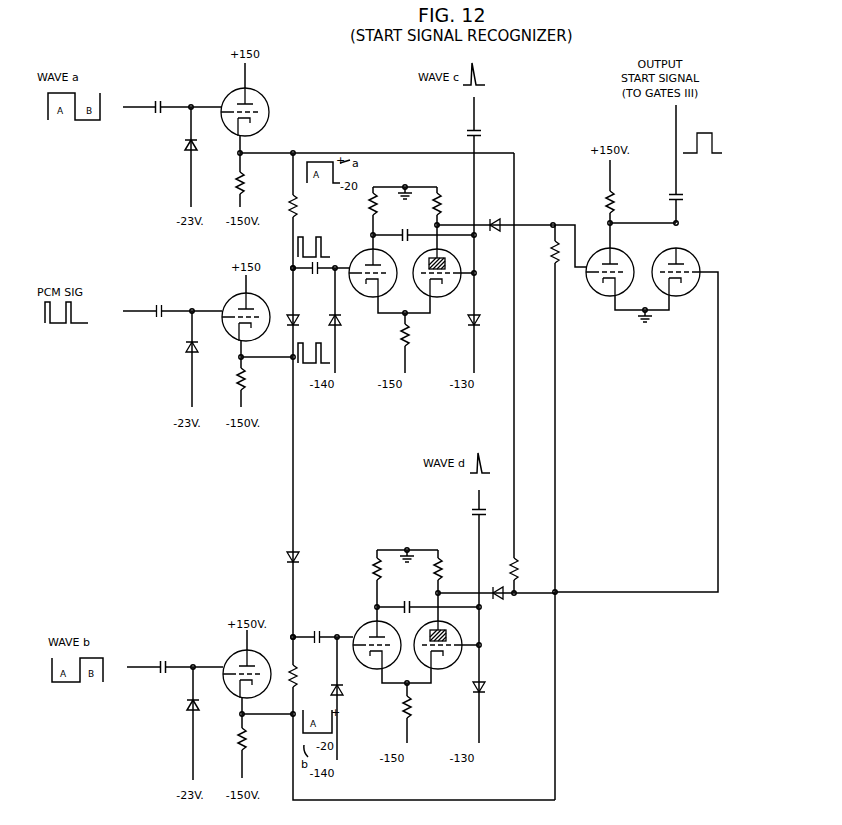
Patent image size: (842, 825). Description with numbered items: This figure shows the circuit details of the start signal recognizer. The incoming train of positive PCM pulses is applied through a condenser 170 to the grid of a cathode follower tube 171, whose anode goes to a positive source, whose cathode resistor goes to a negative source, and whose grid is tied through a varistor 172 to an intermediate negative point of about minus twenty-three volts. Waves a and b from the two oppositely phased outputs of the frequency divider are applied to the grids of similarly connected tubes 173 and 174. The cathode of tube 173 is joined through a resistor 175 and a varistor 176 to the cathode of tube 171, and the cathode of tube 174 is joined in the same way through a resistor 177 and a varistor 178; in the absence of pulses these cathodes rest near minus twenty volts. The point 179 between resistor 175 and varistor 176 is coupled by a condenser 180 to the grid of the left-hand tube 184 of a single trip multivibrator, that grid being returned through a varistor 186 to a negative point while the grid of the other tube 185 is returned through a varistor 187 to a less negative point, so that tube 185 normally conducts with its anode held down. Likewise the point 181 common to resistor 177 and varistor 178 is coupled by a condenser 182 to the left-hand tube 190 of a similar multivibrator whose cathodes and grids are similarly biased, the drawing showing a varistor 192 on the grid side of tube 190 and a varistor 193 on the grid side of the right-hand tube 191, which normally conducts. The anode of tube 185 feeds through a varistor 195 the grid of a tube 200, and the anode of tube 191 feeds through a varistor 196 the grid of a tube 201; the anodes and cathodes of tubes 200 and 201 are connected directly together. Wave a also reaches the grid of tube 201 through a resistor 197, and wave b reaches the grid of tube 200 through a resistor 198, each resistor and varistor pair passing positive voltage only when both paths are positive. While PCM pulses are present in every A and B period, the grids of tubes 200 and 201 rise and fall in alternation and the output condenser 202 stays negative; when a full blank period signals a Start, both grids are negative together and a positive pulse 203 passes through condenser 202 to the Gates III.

The condenser 170 is at (159, 300).
The cathode follower tube 171 is at (230, 335).
The varistor 172 is at (185, 350).
The tube 173 is at (263, 125).
The tube 174 is at (230, 658).
The resistor 175 is at (298, 207).
The varistor 176 is at (297, 318).
The resistor 177 is at (298, 677).
The varistor 178 is at (287, 558).
The point 179 is at (290, 267).
The condenser 180 is at (318, 262).
The point 181 is at (291, 633).
The condenser 182 is at (319, 630).
The left-hand tube 184 is at (365, 298).
The tube 185 is at (441, 298).
The varistor 186 is at (341, 325).
The varistor 187 is at (478, 316).
The left-hand tube 190 is at (369, 670).
The right-hand tube 191 is at (442, 670).
The diode 192 is at (342, 699).
The diode 193 is at (489, 688).
The varistor 195 is at (495, 219).
The varistor 196 is at (500, 599).
The resistor 197 is at (517, 567).
The resistor 198 is at (550, 258).
The tube 200 is at (595, 291).
The tube 201 is at (688, 294).
The output condenser 202 is at (688, 198).
The positive pulse 203 is at (714, 139).